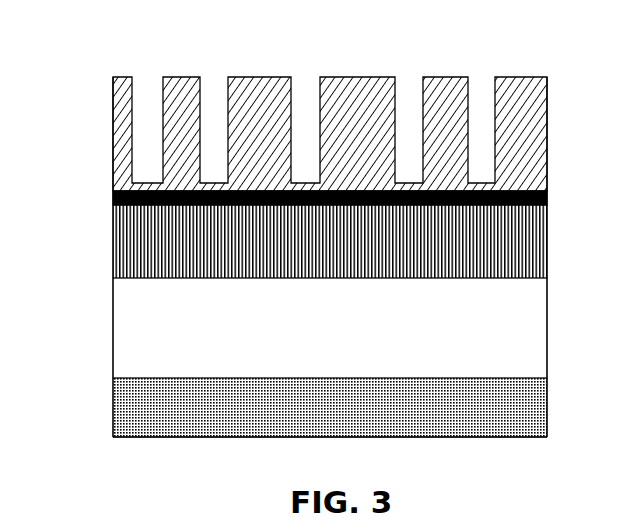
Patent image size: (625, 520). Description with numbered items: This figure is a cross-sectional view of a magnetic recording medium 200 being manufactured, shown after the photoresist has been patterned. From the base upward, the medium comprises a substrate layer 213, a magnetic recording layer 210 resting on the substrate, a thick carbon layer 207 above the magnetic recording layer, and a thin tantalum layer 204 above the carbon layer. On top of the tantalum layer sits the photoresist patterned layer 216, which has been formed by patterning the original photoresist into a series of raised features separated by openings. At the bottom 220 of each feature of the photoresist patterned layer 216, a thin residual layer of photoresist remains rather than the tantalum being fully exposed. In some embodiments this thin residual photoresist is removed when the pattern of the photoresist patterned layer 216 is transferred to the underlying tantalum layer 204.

The magnetic recording medium 200 is at (336, 47).
The photoresist patterned layer 216 is at (113, 145).
The tantalum layer 204 is at (113, 198).
The carbon layer 207 is at (113, 250).
The magnetic recording layer 210 is at (113, 329).
The substrate layer 213 is at (113, 410).
The bottom of each feature of the photoresist patterned layer 220 is at (150, 150).